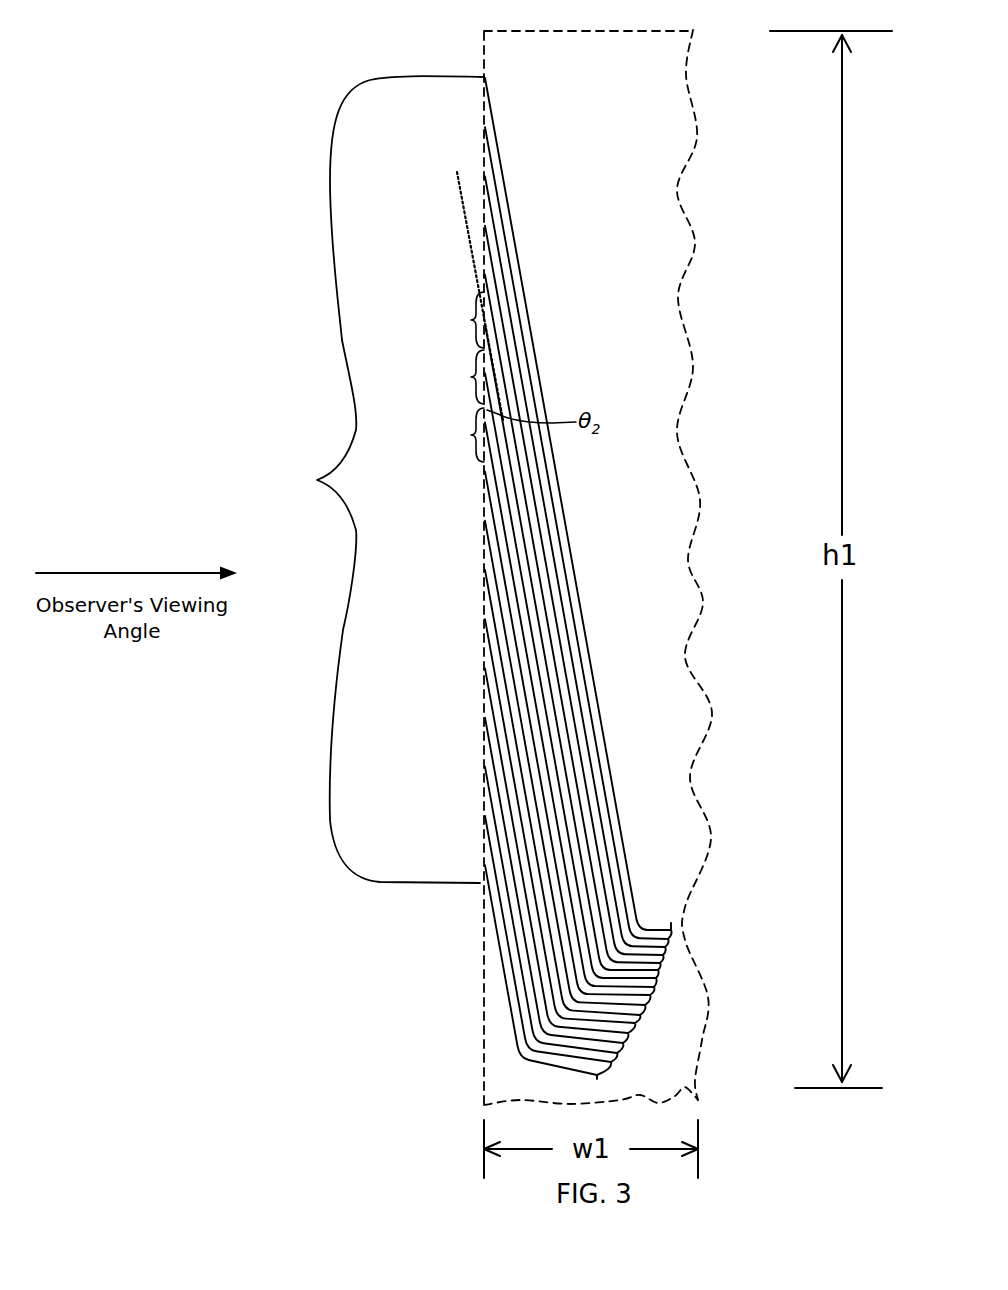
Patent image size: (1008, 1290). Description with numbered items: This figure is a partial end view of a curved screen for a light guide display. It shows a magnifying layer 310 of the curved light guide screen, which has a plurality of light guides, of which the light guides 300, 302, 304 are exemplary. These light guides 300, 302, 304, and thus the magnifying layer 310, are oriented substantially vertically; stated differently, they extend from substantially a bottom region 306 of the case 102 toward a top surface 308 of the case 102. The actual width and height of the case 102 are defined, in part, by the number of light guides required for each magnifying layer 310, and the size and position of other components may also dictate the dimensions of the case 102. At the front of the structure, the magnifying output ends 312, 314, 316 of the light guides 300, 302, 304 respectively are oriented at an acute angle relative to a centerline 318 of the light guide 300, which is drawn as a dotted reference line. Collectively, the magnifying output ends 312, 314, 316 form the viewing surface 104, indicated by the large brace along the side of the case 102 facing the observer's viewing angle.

The case 102 is at (623, 562).
The viewing surface 104 is at (373, 479).
The light guide 300 is at (490, 338).
The light guide 302 is at (490, 392).
The light guide 304 is at (490, 451).
The bottom region 306 is at (540, 1078).
The top surface 308 is at (545, 31).
The magnifying layer 310 is at (583, 578).
The magnifying output end 312 is at (452, 320).
The magnifying output end 314 is at (452, 377).
The magnifying output end 316 is at (452, 435).
The centerline 318 is at (462, 214).